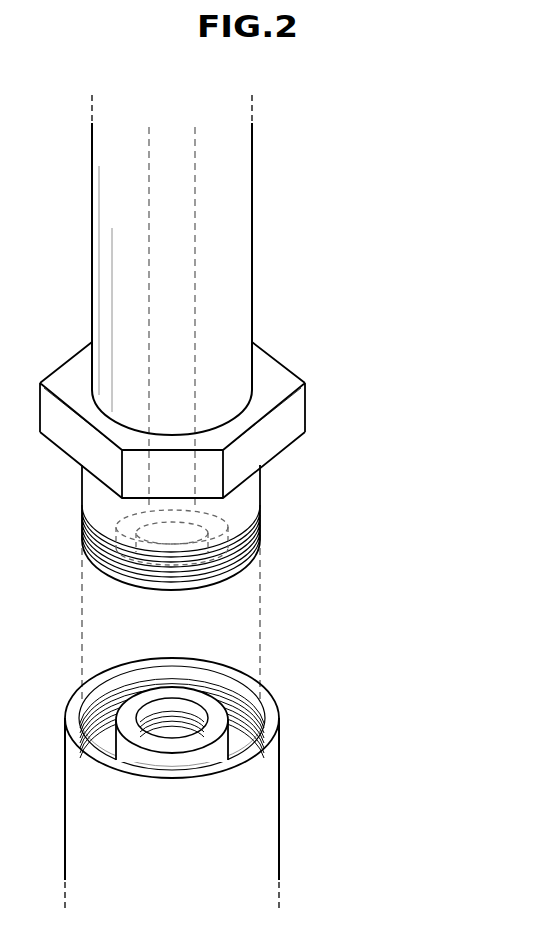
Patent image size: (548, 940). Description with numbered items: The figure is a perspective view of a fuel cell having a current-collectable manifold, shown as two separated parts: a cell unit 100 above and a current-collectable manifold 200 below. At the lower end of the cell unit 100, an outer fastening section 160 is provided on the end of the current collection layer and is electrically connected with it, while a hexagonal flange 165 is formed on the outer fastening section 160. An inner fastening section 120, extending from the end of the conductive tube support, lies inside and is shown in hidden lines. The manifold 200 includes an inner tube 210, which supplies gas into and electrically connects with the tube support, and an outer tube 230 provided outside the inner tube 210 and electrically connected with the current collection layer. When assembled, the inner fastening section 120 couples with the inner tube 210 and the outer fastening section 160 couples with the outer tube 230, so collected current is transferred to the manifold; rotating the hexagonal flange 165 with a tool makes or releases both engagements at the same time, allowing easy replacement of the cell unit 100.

The cell unit 100 is at (288, 231).
The hexagonal flange 165 is at (293, 418).
The outer fastening section 160 is at (260, 512).
The inner fastening section 120 is at (208, 528).
The current-collectable manifold 200 is at (264, 783).
The inner tube 210 is at (215, 727).
The outer tube 230 is at (247, 830).